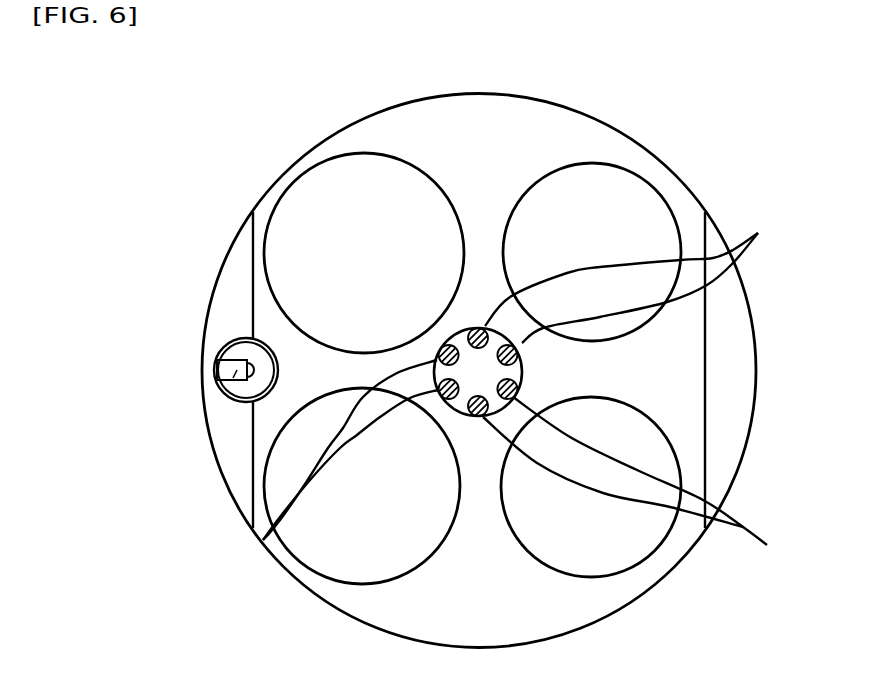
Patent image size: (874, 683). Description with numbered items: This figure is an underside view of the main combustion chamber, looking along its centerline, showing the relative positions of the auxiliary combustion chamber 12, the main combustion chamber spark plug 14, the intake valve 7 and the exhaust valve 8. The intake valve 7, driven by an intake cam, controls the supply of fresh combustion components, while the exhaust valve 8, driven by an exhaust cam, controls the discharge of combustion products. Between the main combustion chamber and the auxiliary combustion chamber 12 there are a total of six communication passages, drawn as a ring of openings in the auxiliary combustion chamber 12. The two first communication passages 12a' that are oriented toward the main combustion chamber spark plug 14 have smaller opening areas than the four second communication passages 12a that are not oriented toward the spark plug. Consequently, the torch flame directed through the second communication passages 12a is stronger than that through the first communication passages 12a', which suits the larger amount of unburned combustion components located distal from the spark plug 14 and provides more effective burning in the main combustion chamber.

The intake valve 7 is at (328, 232).
The exhaust valve 8 is at (608, 233).
The auxiliary combustion chamber 12 is at (460, 340).
The second communication passages 12a is at (641, 389).
The first communication passages 12a' is at (309, 472).
The main combustion chamber spark plug 14 is at (222, 395).